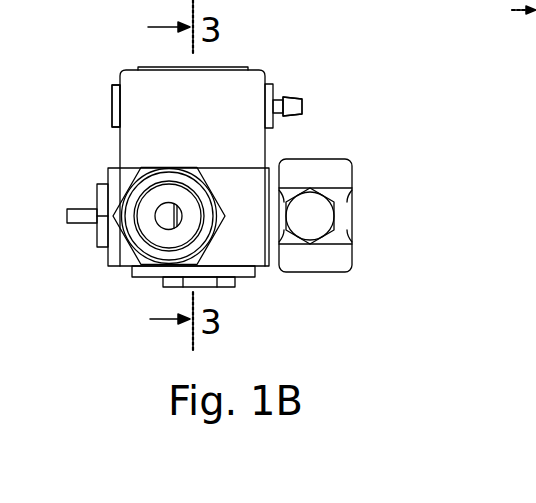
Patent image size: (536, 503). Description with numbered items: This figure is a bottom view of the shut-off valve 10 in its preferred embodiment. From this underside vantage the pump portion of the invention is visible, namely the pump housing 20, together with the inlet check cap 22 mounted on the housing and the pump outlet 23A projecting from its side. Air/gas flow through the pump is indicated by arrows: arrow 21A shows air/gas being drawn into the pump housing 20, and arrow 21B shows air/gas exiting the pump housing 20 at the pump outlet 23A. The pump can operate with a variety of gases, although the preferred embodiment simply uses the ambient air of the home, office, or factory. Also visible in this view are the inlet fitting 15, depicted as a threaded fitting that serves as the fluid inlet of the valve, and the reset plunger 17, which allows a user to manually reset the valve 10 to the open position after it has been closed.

The shut-off valve 10 is at (337, 58).
The inlet fitting 15 is at (128, 243).
The reset plunger 17 is at (84, 209).
The pump housing 20 is at (263, 70).
The arrow 21A is at (100, 105).
The arrow 21B is at (305, 105).
The inlet check cap 22 is at (117, 85).
The pump outlet 23A is at (298, 116).